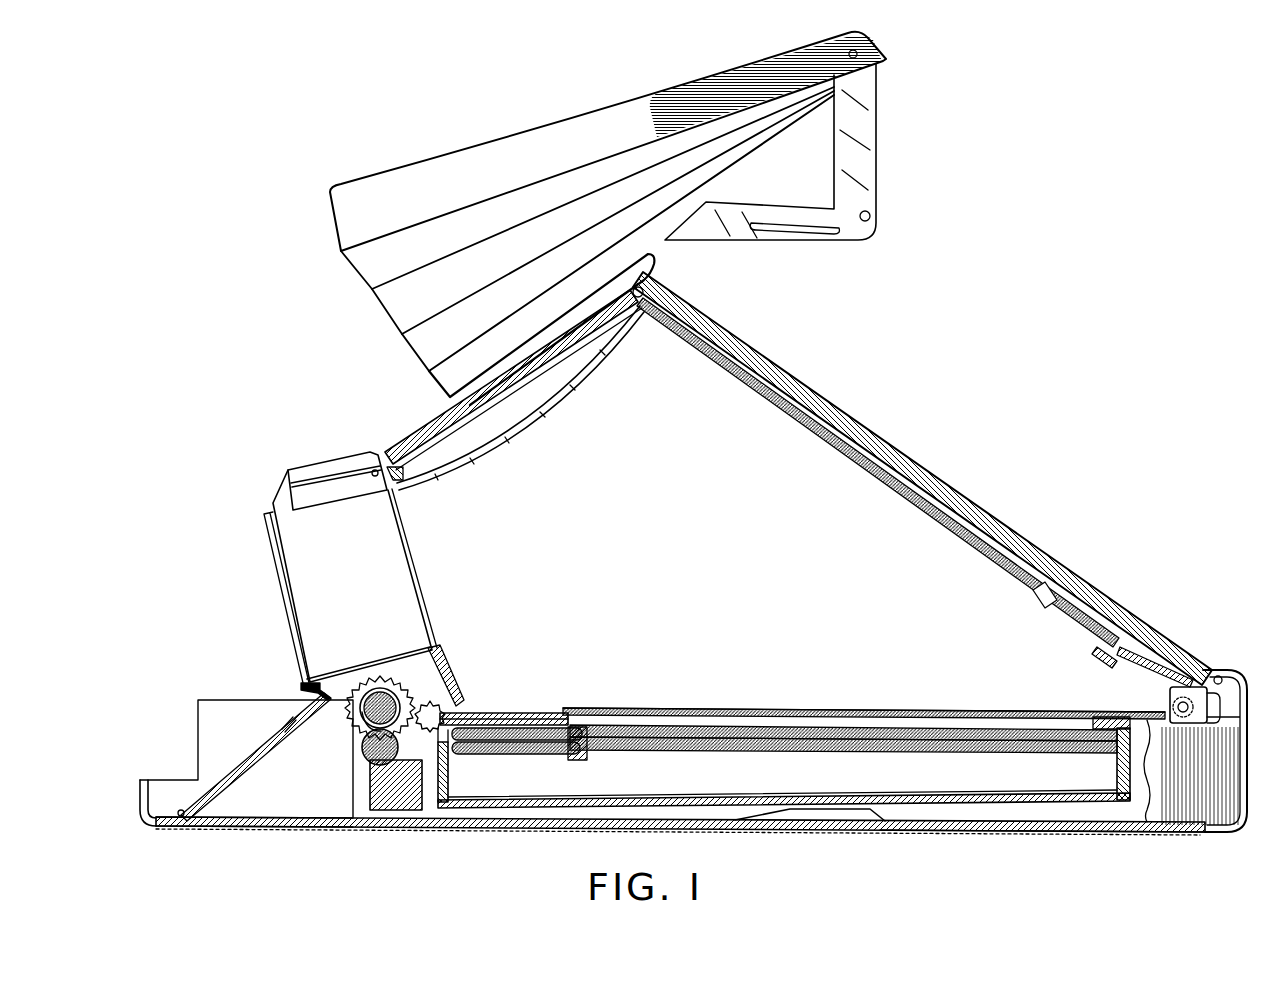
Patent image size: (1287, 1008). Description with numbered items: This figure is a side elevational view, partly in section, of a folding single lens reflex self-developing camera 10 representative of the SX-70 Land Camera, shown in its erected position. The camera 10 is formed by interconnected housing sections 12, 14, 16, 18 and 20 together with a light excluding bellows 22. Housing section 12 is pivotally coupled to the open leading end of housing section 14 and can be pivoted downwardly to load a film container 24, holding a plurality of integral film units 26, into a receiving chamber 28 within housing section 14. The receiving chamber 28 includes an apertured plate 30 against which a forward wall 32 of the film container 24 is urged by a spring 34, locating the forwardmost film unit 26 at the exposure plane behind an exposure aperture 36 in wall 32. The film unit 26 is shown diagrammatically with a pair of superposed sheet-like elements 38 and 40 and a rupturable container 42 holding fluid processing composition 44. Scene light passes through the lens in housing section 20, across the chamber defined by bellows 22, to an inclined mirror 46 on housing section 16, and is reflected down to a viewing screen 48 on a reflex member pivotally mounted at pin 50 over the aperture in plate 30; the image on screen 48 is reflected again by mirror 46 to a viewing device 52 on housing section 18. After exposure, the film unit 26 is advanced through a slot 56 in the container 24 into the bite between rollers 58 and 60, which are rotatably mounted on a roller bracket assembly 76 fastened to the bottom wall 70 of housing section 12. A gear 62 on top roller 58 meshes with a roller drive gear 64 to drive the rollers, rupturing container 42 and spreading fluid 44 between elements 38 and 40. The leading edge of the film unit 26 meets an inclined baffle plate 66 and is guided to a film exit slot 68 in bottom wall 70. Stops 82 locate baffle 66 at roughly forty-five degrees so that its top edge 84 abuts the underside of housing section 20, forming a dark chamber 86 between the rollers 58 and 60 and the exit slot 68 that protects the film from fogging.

The self-developing camera 10 is at (1005, 319).
The housing section 12 is at (320, 836).
The housing section 14 is at (1153, 824).
The housing section 16 is at (948, 500).
The housing section 18 is at (433, 422).
The housing section 20 is at (303, 556).
The light excluding bellows 22 is at (553, 392).
The film container 24 is at (1077, 798).
The film unit 26 is at (833, 756).
The receiving chamber 28 is at (952, 815).
The apertured plate 30 is at (517, 714).
The forward wall 32 is at (538, 713).
The spring 34 is at (808, 823).
The exposure aperture 36 is at (575, 716).
The sheet-like element 38 is at (705, 727).
The sheet-like element 40 is at (733, 727).
The rupturable container 42 is at (537, 757).
The fluid processing composition 44 is at (502, 752).
The inclined mirror 46 is at (944, 540).
The viewing screen 48 is at (880, 709).
The pin 50 is at (1178, 705).
The viewing device 52 is at (385, 159).
The slot 56 is at (440, 735).
The top roller 58 is at (377, 688).
The roller 60 is at (362, 756).
The gear 62 is at (398, 691).
The roller drive gear 64 is at (458, 708).
The baffle plate 66 is at (267, 739).
The film exit slot 68 is at (181, 818).
The bottom wall 70 is at (255, 824).
The roller bracket assembly 76 is at (360, 726).
The tabs or stops 82 is at (282, 719).
The top edge 84 is at (307, 673).
The dark chamber 86 is at (249, 789).